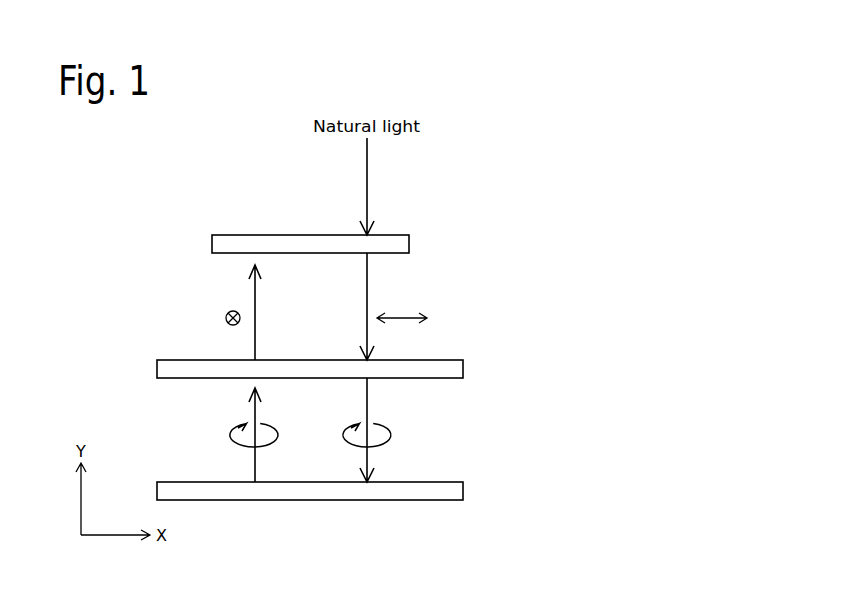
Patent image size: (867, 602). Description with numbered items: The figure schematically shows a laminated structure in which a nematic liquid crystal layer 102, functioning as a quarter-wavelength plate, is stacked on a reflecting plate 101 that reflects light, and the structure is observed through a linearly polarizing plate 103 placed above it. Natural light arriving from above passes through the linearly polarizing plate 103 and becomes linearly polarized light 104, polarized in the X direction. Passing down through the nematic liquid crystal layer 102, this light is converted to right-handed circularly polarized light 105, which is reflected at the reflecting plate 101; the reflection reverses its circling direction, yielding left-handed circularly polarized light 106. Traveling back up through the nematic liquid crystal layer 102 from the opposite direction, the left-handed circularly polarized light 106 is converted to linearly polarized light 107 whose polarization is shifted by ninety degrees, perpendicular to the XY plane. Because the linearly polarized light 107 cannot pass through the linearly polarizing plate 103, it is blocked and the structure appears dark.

The reflecting plate 101 is at (450, 493).
The nematic liquid crystal layer 102 is at (450, 371).
The linearly polarizing plate 103 is at (397, 246).
The linearly polarized light 104 is at (368, 288).
The right-handed circularly polarized light 105 is at (368, 403).
The left-handed circularly polarized light 106 is at (256, 405).
The linearly polarized light 107 is at (256, 290).